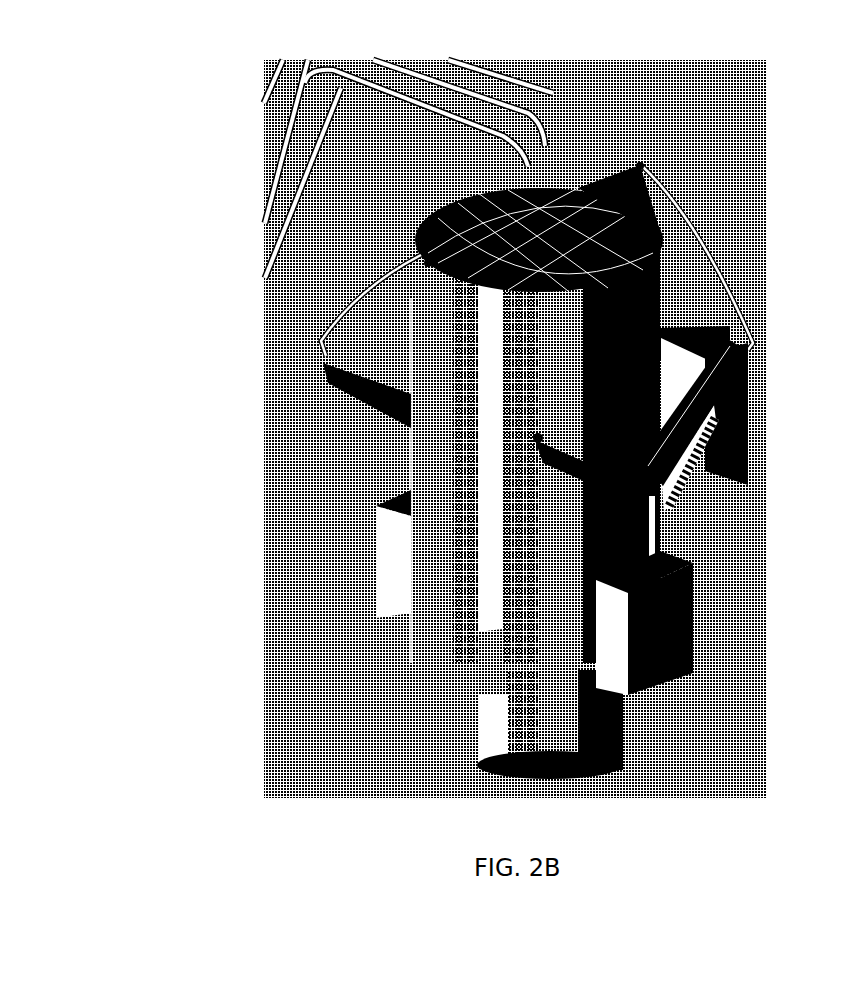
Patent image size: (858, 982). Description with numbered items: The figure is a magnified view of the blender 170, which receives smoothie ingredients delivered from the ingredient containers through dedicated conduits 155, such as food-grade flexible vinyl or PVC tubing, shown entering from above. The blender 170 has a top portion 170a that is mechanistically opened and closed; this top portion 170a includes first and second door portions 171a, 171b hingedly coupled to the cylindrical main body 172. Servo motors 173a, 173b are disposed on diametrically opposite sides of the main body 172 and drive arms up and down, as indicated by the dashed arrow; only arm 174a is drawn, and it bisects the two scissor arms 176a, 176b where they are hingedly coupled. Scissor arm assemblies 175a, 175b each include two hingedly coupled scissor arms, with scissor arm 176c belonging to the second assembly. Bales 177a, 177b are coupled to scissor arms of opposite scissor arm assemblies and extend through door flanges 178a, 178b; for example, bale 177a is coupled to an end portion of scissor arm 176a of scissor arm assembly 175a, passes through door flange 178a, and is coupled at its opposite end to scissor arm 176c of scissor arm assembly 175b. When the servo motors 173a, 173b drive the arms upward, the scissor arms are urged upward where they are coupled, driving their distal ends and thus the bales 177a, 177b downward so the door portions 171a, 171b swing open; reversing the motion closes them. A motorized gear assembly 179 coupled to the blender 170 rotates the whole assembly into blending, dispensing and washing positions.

The blender 170 is at (288, 686).
The top portion 170a is at (656, 120).
The conduits 155 is at (468, 130).
The first door portion 171a is at (460, 450).
The second door portion 171b is at (545, 182).
The cylindrical main body 172 is at (535, 513).
The servo motor 173a is at (680, 674).
The servo motor 173b is at (366, 565).
The arm 174a is at (658, 522).
The scissor arm assembly 175a is at (592, 495).
The scissor arm assembly 175b is at (380, 422).
The scissor arm 176a is at (610, 545).
The scissor arm 176b is at (718, 373).
The scissor arm 176c is at (345, 387).
The bale 177a is at (350, 290).
The bale 177b is at (677, 212).
The door flange 178a is at (418, 262).
The door flange 178b is at (636, 158).
The motorized gear assembly 179 is at (676, 312).